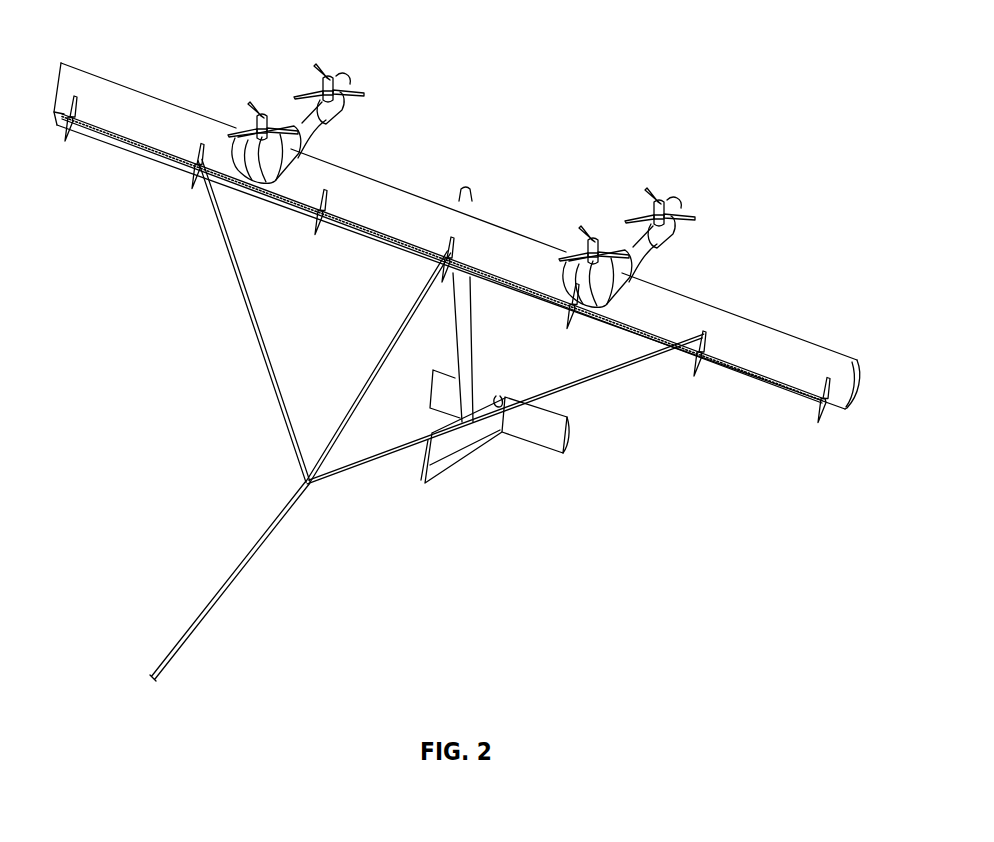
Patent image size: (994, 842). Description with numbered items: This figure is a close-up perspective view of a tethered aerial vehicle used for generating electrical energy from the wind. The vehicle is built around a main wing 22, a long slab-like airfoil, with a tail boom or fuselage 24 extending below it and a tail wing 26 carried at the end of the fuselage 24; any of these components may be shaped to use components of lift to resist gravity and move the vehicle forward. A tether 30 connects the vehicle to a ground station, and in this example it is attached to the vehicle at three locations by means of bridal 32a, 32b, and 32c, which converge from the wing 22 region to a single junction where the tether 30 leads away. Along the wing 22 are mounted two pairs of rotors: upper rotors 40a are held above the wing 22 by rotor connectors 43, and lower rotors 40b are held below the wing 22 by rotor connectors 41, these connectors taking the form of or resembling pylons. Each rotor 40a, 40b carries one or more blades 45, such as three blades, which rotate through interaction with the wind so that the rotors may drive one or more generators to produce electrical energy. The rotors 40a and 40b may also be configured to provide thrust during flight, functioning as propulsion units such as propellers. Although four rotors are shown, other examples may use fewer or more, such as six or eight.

The main wing 22 is at (770, 350).
The tail boom or fuselage 24 is at (467, 337).
The tail wing 26 is at (478, 445).
The tether 30 is at (250, 560).
The bridal 32a is at (253, 313).
The bridal 32b is at (390, 338).
The bridal 32c is at (388, 453).
The upper rotors 40a is at (258, 113).
The lower rotors 40b is at (328, 76).
The rotor connectors 41 is at (333, 118).
The rotor connectors 43 is at (253, 160).
The blades 45 is at (355, 92).